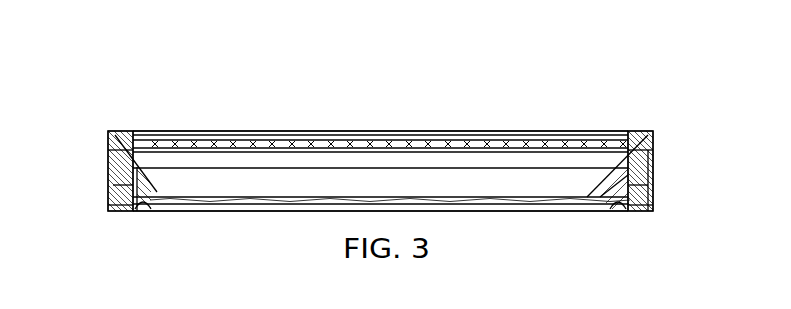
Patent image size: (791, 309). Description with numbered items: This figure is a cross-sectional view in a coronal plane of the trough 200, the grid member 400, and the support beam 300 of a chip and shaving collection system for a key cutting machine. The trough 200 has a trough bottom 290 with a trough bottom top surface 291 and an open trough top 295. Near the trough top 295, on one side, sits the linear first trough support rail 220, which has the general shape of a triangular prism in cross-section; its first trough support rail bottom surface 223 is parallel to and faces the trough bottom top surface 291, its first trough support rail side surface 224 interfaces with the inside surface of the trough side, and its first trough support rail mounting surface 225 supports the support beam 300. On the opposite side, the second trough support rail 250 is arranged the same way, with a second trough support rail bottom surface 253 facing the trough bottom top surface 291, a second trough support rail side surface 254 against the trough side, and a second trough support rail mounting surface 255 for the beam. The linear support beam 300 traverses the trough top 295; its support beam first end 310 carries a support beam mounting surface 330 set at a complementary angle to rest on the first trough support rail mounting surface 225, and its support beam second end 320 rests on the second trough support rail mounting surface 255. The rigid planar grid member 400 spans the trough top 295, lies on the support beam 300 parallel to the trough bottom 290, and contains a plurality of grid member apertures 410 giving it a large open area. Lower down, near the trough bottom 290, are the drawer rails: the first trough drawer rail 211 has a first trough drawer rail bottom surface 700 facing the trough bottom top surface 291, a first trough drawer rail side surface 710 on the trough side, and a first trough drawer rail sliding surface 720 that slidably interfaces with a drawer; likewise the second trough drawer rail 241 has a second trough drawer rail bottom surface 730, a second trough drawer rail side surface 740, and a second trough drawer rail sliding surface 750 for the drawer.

The trough 200 is at (116, 136).
The second trough support rail 250 is at (133, 150).
The second trough drawer rail sliding surface 750 is at (151, 192).
The support beam second end 320 is at (202, 157).
The grid member 400 is at (250, 147).
The grid member apertures 410 is at (265, 145).
The support beam 300 is at (223, 158).
The trough bottom 290 is at (387, 200).
The trough top 295 is at (423, 131).
The trough bottom top surface 291 is at (499, 196).
The support beam first end 310 is at (569, 163).
The first trough support rail mounting surface 225 is at (623, 170).
The first trough support rail 220 is at (629, 133).
The first trough support rail side surface 224 is at (641, 136).
The first trough support rail bottom surface 223 is at (655, 168).
The support beam mounting surface 330 is at (658, 200).
The first trough drawer rail side surface 710 is at (637, 203).
The first trough drawer rail bottom surface 700 is at (607, 203).
The first trough drawer rail 211 is at (604, 197).
The first trough drawer rail sliding surface 720 is at (600, 190).
The second trough support rail mounting surface 255 is at (133, 163).
The second trough support rail side surface 254 is at (133, 158).
The second trough drawer rail side surface 740 is at (127, 185).
The second trough drawer rail 241 is at (135, 197).
The second trough drawer rail bottom surface 730 is at (140, 207).
The second trough support rail bottom surface 253 is at (143, 190).